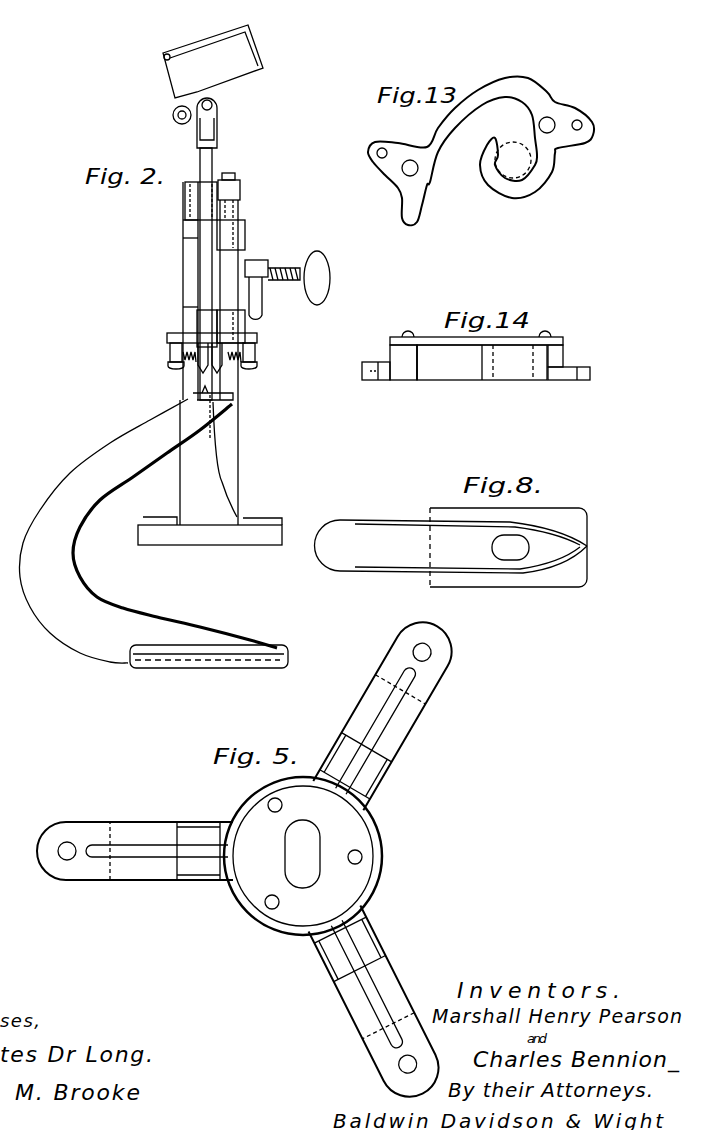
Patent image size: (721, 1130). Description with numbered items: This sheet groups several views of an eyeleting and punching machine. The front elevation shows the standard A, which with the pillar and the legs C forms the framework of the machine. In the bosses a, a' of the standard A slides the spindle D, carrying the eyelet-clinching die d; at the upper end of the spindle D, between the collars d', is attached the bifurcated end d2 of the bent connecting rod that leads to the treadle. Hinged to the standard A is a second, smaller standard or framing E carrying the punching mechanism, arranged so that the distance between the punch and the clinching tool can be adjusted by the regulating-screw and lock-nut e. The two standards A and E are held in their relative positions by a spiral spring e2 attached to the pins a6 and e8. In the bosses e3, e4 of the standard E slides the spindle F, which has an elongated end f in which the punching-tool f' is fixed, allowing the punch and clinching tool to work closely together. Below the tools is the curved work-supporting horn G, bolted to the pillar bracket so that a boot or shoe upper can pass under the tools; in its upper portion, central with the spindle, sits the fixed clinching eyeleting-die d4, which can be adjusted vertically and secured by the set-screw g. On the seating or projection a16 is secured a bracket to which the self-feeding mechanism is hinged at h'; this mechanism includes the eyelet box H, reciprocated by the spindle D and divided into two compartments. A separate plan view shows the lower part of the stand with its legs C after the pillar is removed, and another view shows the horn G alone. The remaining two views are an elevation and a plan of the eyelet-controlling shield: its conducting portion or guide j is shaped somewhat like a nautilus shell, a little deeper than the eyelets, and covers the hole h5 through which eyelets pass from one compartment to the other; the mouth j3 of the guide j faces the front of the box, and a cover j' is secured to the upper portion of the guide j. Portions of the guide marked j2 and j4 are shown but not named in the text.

In FIG. 2, the box H is at (213, 61).
In FIG. 2, the hinge h' is at (169, 111).
In FIG. 2, the collars d' is at (224, 121).
In FIG. 2, the bifurcated end d2 is at (197, 130).
In FIG. 2, the spindle D is at (212, 160).
In FIG. 2, the boss a is at (183, 201).
In FIG. 2, the seating or projection a16 is at (183, 226).
In FIG. 2, the standard A is at (183, 272).
In FIG. 2, the spindle F is at (240, 212).
In FIG. 2, the boss e3 is at (245, 236).
In FIG. 2, the regulating-screw and lock-nut e is at (260, 260).
In FIG. 2, the boss a' is at (180, 327).
In FIG. 2, the boss e4 is at (245, 330).
In FIG. 2, the pin a6 is at (167, 340).
In FIG. 2, the spiral spring e2 is at (183, 362).
In FIG. 2, the pin e8 is at (257, 352).
In FIG. 2, the eyelet-clinching die d is at (182, 373).
In FIG. 2, the punching-tool f' is at (243, 366).
In FIG. 2, the elongated end f is at (267, 374).
In FIG. 2, the fixed clinching eyeleting-die d4 is at (205, 400).
In FIG. 2, the set-screw g is at (212, 408).
In FIG. 2, the second standard or framing E is at (240, 440).
In FIG. 2, the work-supporting horn G is at (153, 533).
In FIG. 8, the work-supporting horn G is at (451, 547).
In FIG. 13, the conducting portion or guide j is at (480, 144).
In FIG. 14, the conducting portion or guide j is at (476, 375).
In FIG. 13, the arm of hook plate j2 is at (500, 120).
In FIG. 14, the arm of hook plate j2 is at (418, 375).
In FIG. 13, the mouth j3 is at (420, 206).
In FIG. 14, the mouth j3 is at (482, 362).
In FIG. 13, the curl of hook plate j4 is at (524, 190).
In FIG. 14, the curl of hook plate j4 is at (508, 368).
In FIG. 13, the hole h5 is at (520, 163).
In FIG. 14, the cover j' is at (486, 326).
In FIG. 5, the legs C is at (428, 722).